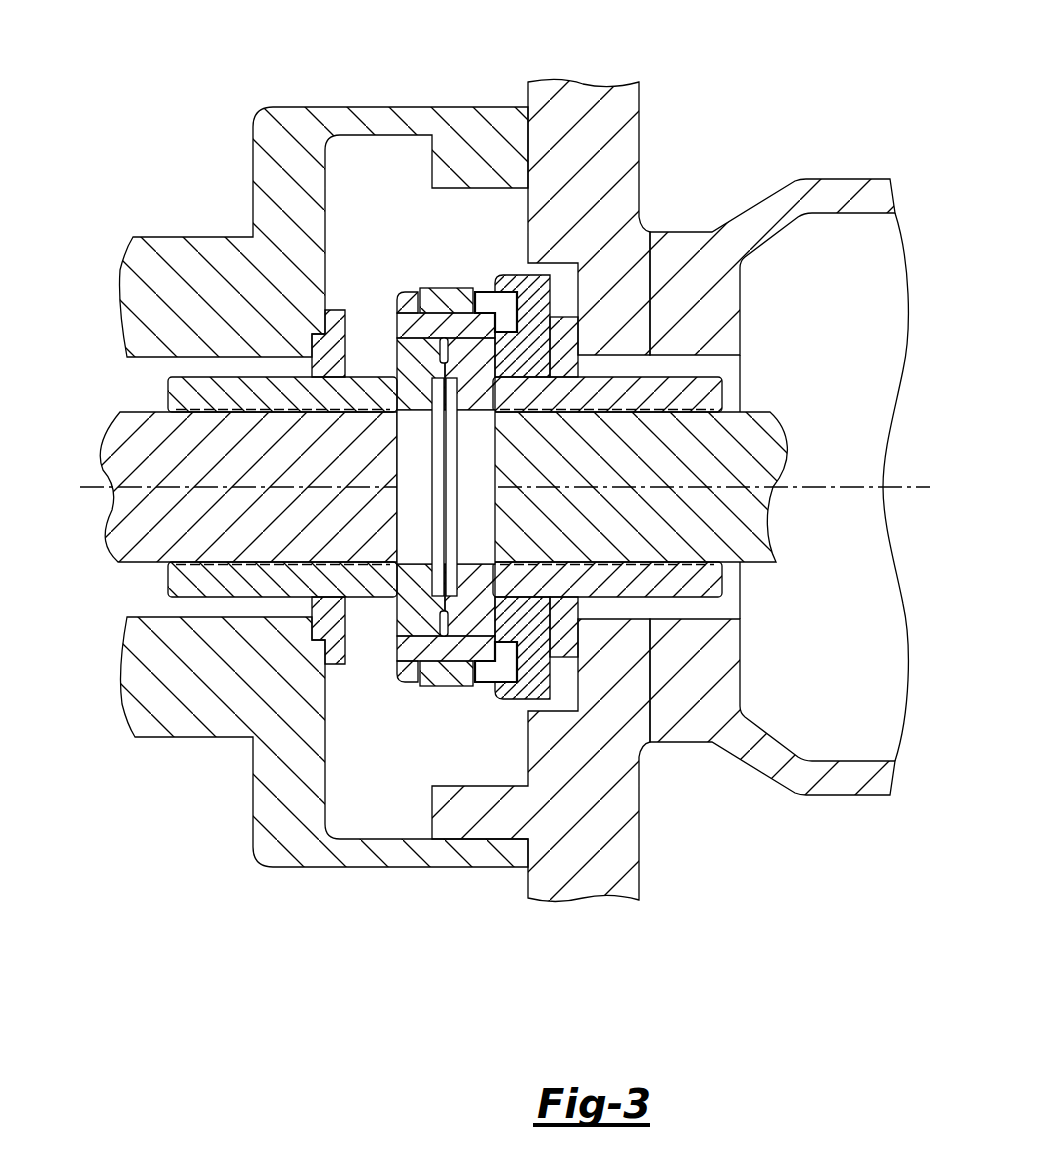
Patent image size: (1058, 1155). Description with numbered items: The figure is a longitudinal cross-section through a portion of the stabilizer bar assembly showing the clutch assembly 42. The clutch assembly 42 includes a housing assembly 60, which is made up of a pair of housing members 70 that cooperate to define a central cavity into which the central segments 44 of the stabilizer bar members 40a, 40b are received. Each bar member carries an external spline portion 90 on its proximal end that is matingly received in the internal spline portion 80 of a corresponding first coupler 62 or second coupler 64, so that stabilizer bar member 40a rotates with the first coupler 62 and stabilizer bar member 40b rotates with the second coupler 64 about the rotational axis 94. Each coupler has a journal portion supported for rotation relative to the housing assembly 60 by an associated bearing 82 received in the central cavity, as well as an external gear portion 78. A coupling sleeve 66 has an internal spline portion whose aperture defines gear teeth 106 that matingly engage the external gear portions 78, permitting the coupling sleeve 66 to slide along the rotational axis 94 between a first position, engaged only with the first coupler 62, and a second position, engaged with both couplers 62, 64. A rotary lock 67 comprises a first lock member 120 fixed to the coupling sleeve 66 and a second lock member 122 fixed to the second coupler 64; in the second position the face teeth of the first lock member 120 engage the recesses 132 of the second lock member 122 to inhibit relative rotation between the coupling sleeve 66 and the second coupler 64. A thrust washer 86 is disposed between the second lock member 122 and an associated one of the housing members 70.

The clutch assembly 42 is at (142, 860).
The housing assembly 60 is at (594, 82).
The housing members 70 is at (843, 174).
The stabilizer bar member 40a is at (120, 404).
The stabilizer bar member 40b is at (772, 404).
The central segments 44 is at (130, 508).
The rotational axis 94 is at (927, 487).
The first coupler 62 is at (213, 390).
The second coupler 64 is at (660, 388).
The bearing 82 is at (188, 609).
The external spline portion 90 is at (247, 563).
The internal spline portion 80 is at (650, 563).
The thrust washer 86 is at (320, 347).
The coupling sleeve 66 is at (400, 313).
The external gear portion 78 is at (468, 614).
The recesses 132 is at (433, 290).
The gear teeth 106 is at (437, 672).
The rotary lock 67 is at (474, 655).
The first lock member 120 is at (483, 688).
The second lock member 122 is at (513, 692).